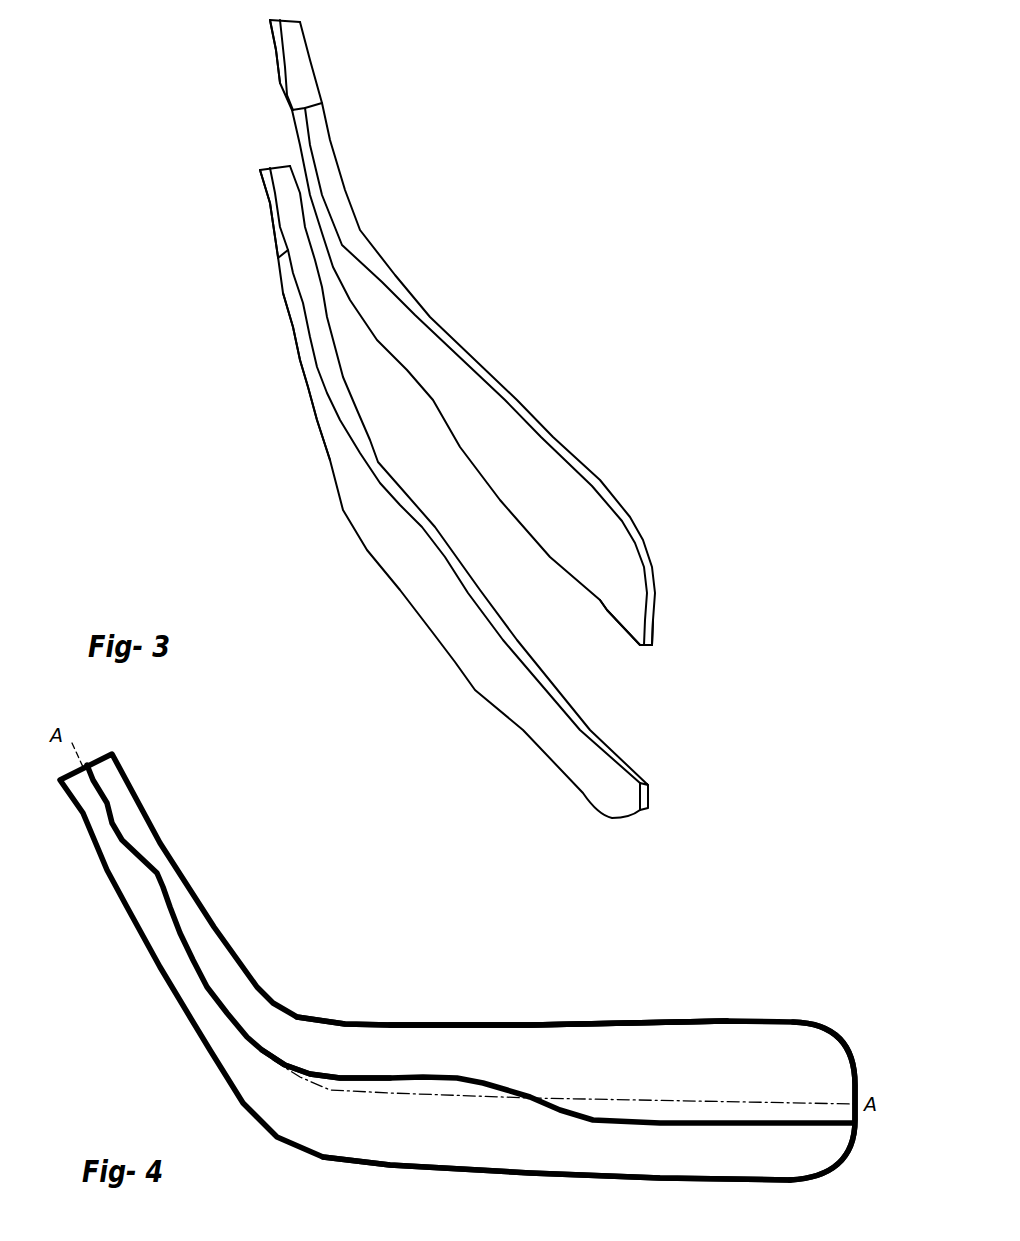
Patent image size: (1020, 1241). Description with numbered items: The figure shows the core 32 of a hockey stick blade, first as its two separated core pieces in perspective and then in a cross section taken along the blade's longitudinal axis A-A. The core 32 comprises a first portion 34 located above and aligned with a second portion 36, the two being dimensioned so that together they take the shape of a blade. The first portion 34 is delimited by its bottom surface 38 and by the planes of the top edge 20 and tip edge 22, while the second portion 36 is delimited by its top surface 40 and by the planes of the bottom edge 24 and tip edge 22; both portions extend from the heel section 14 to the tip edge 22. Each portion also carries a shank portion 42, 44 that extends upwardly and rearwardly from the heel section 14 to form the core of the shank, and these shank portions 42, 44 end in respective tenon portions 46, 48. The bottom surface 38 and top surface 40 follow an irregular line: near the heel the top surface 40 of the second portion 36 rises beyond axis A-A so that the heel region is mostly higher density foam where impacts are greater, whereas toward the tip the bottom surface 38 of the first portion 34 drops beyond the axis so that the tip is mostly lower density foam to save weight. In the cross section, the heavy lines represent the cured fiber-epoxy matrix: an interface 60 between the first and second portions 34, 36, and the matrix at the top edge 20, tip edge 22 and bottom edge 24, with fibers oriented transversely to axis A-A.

In FIG. 4, the heel section 14 is at (278, 1103).
In FIG. 4, the top edge 20 is at (523, 1025).
In FIG. 4, the tip edge 22 is at (853, 1072).
In FIG. 4, the bottom edge 24 is at (580, 1180).
In FIG. 3, the core 32 is at (588, 306).
In FIG. 3, the first portion 34 is at (578, 519).
In FIG. 4, the first portion 34 is at (600, 1067).
In FIG. 3, the second portion 36 is at (423, 564).
In FIG. 4, the second portion 36 is at (333, 1097).
In FIG. 3, the bottom surface 38 is at (603, 620).
In FIG. 3, the top surface 40 is at (593, 723).
In FIG. 3, the shank portion 42 is at (342, 255).
In FIG. 3, the shank portion 44 is at (330, 418).
In FIG. 3, the tenon portion 46 is at (297, 52).
In FIG. 3, the tenon portion 48 is at (272, 203).
In FIG. 4, the interface 60 is at (453, 1080).